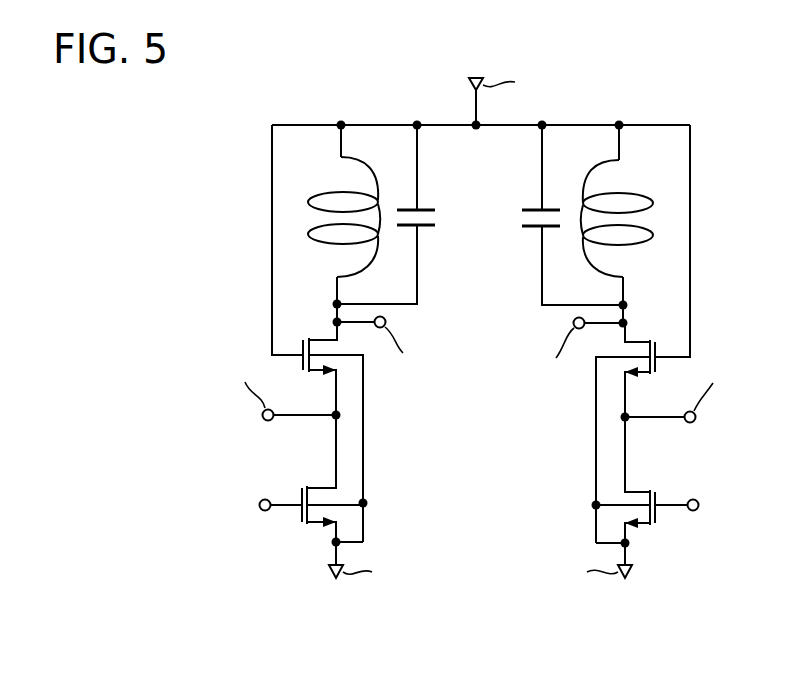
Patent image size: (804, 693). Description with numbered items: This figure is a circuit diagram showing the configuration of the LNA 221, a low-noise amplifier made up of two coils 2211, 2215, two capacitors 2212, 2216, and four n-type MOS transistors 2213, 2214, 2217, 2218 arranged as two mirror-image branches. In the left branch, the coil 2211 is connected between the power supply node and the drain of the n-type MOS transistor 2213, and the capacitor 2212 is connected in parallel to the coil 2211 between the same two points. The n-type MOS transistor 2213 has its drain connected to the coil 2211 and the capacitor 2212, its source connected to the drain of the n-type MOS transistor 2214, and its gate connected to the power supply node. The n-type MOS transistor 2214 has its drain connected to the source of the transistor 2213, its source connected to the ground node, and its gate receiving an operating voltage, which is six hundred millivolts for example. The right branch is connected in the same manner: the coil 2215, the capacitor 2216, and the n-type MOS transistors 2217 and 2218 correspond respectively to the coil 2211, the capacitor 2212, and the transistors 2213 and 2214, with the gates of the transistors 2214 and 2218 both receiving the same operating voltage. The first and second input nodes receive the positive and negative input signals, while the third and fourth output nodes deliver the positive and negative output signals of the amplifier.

The LNA 221 is at (501, 42).
The coil 2211 is at (313, 195).
The capacitor 2212 is at (433, 208).
The n-type MOS transistor 2213 is at (325, 333).
The n-type MOS transistor 2214 is at (325, 488).
The coil 2215 is at (658, 170).
The capacitor 2216 is at (532, 229).
The n-type MOS transistor 2217 is at (633, 340).
The n-type MOS transistor 2218 is at (638, 490).